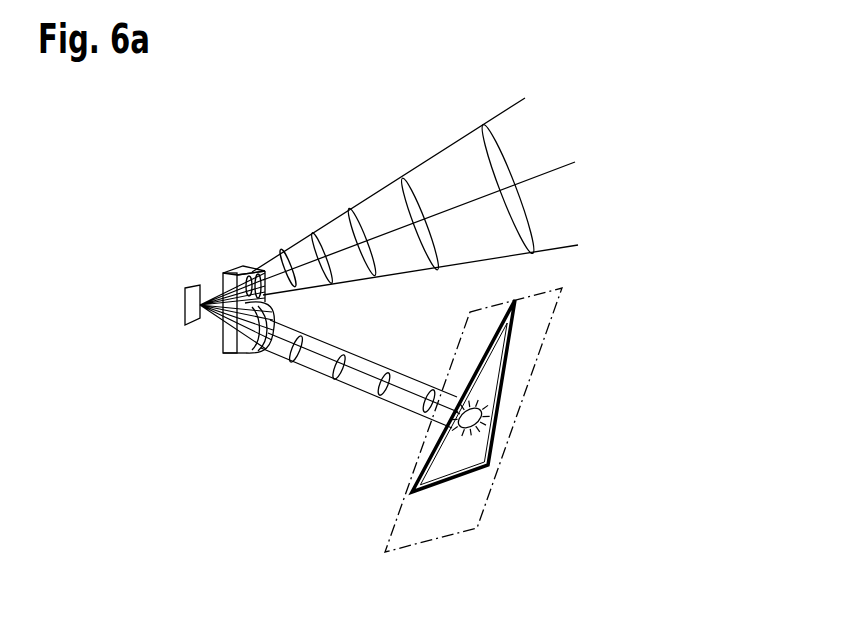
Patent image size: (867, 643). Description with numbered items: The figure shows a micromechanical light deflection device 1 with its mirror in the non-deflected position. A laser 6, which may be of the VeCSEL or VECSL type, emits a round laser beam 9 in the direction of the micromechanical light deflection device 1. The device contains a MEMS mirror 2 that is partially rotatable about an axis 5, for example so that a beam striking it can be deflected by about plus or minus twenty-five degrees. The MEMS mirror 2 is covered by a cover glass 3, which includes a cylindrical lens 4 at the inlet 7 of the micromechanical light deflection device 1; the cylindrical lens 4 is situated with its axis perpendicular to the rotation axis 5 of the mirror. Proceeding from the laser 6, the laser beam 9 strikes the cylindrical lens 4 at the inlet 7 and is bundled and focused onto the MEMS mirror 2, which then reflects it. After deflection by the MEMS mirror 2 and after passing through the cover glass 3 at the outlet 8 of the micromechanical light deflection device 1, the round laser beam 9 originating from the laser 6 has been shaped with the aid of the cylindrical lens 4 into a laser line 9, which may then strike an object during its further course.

The micromechanical light deflection device 1 is at (128, 203).
The MEMS mirror 2 is at (185, 300).
The cover glass 3 is at (223, 344).
The cylindrical lens 4 is at (265, 303).
The axis 5 is at (186, 245).
The laser 6 is at (487, 505).
The inlet 7 is at (251, 378).
The outlet 8 is at (236, 240).
The laser beam 9 is at (428, 158).